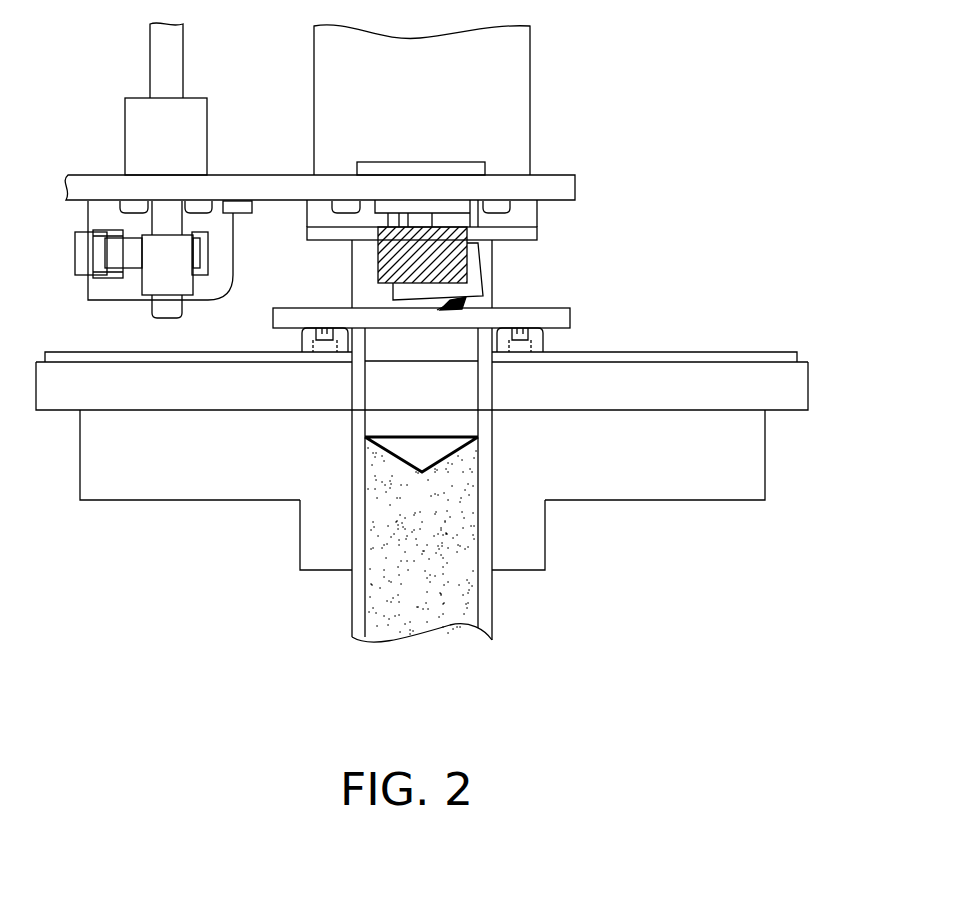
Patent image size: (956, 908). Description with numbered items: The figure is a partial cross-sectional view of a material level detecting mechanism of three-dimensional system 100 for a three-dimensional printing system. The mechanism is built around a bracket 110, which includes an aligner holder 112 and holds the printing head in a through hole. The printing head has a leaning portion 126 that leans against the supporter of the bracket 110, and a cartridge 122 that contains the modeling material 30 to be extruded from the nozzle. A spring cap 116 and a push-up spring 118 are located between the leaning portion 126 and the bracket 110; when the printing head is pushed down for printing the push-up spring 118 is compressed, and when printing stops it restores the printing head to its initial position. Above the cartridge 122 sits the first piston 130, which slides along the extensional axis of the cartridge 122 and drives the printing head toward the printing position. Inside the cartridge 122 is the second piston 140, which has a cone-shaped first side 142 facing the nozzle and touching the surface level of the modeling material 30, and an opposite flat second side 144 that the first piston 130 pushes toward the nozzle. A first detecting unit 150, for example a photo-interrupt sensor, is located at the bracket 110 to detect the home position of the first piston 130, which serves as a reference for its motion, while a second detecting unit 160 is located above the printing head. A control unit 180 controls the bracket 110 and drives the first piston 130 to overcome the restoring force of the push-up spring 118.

The modeling material 30 is at (415, 612).
The material level detecting mechanism of 3-D system 100 is at (765, 722).
The bracket 110 is at (773, 333).
The aligner holder 112 is at (523, 560).
The spring cap 116 is at (545, 348).
The push-up spring 118 is at (522, 312).
The cartridge 122 is at (363, 602).
The leaning portion 126 is at (320, 320).
The first piston 130 is at (488, 277).
The second piston 140 is at (462, 418).
The first side 142 is at (437, 453).
The second side 144 is at (443, 360).
The first detecting unit 150 is at (197, 262).
The second detecting unit 160 is at (467, 263).
The control unit 180 is at (500, 100).